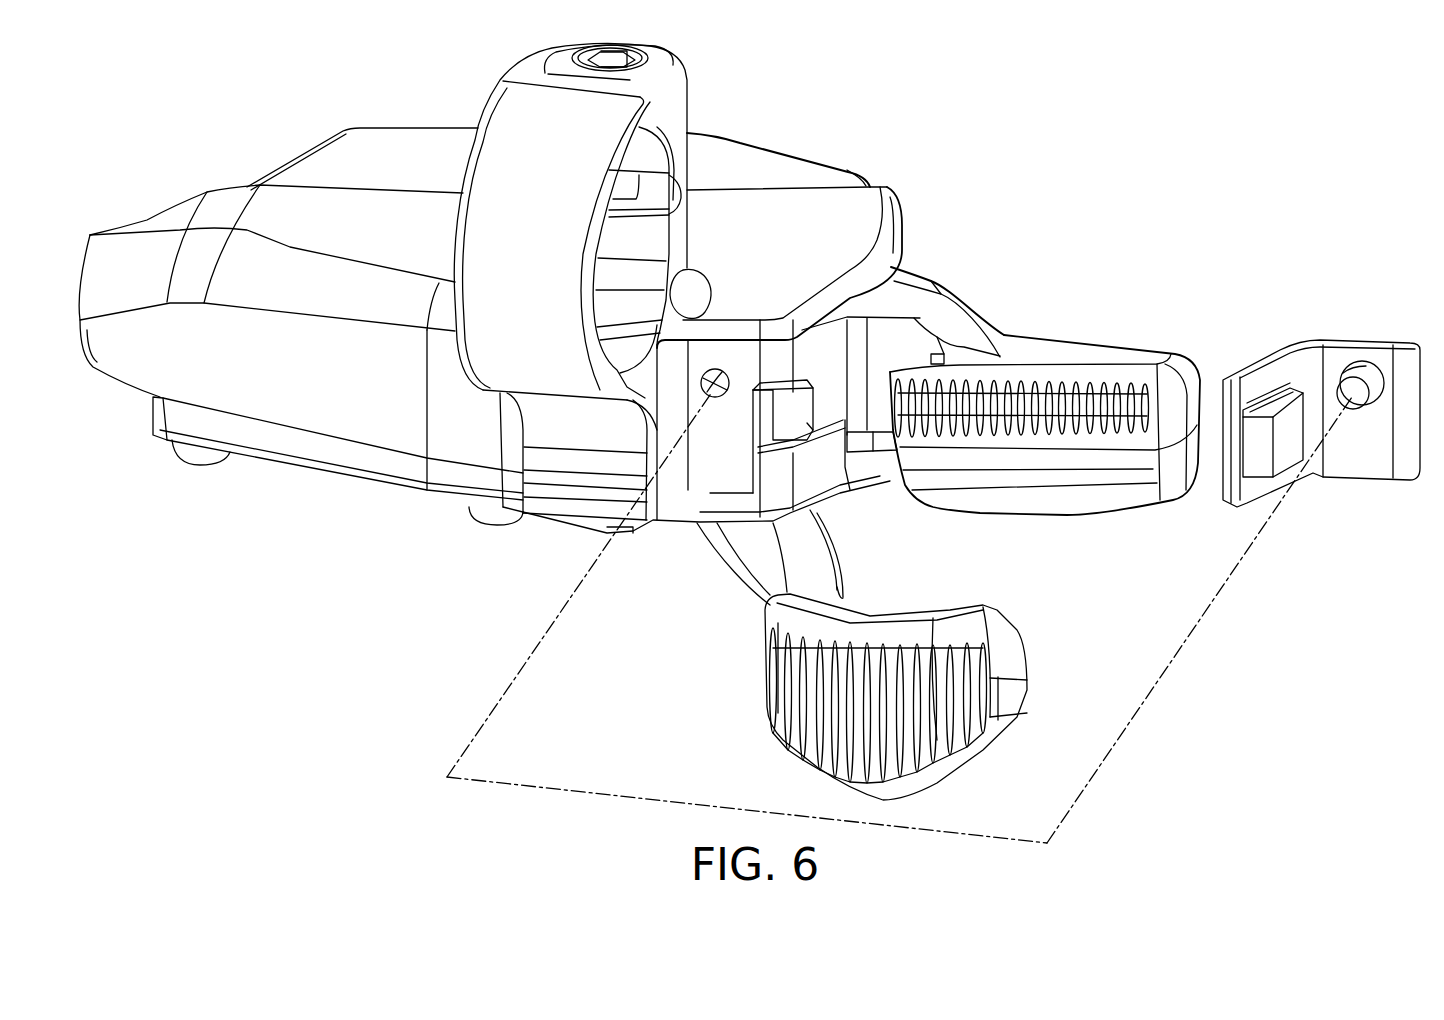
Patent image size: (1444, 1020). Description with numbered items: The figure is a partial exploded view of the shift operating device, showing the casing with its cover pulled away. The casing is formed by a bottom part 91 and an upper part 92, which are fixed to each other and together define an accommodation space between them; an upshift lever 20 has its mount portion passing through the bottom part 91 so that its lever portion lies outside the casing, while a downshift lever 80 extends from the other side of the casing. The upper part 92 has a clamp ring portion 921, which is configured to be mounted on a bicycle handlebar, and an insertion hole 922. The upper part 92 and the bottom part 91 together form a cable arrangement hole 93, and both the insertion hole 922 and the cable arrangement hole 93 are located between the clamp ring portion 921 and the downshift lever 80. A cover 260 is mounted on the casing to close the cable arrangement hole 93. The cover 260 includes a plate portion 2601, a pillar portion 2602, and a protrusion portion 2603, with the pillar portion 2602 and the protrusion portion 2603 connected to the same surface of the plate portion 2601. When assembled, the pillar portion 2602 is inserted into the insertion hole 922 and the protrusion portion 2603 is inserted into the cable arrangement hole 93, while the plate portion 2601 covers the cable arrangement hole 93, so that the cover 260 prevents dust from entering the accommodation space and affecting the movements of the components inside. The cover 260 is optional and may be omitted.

The upshift lever 20 is at (1037, 685).
The downshift lever 80 is at (1037, 333).
The bottom part 91 is at (327, 457).
The upper part 92 is at (237, 387).
The clamp ring portion 921 is at (513, 110).
The insertion hole 922 is at (712, 400).
The cable arrangement hole 93 is at (802, 432).
The cover 260 is at (1307, 355).
The plate portion 2601 is at (1303, 343).
The pillar portion 2602 is at (1378, 323).
The protrusion portion 2603 is at (1283, 418).